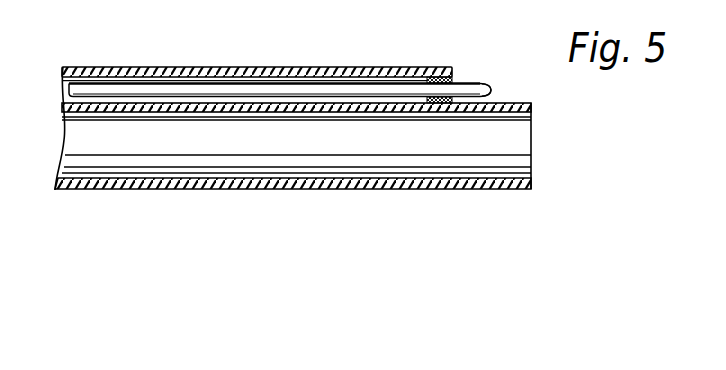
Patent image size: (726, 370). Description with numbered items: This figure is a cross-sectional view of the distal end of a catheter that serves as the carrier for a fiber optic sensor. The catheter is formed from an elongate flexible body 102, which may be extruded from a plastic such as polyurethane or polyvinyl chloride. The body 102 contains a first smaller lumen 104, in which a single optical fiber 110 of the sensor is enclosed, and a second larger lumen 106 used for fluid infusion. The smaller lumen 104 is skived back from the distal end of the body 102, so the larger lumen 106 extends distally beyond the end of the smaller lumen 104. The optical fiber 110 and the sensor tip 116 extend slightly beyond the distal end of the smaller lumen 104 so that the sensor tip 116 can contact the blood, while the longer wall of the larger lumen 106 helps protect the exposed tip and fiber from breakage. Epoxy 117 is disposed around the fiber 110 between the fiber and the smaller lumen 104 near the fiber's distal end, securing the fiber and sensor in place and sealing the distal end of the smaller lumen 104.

The elongate flexible body 102 is at (277, 193).
The first smaller lumen 104 is at (412, 76).
The second larger lumen 106 is at (503, 142).
The optical fiber 110 is at (268, 83).
The sensor tip 116 is at (488, 83).
The epoxy 117 is at (457, 78).